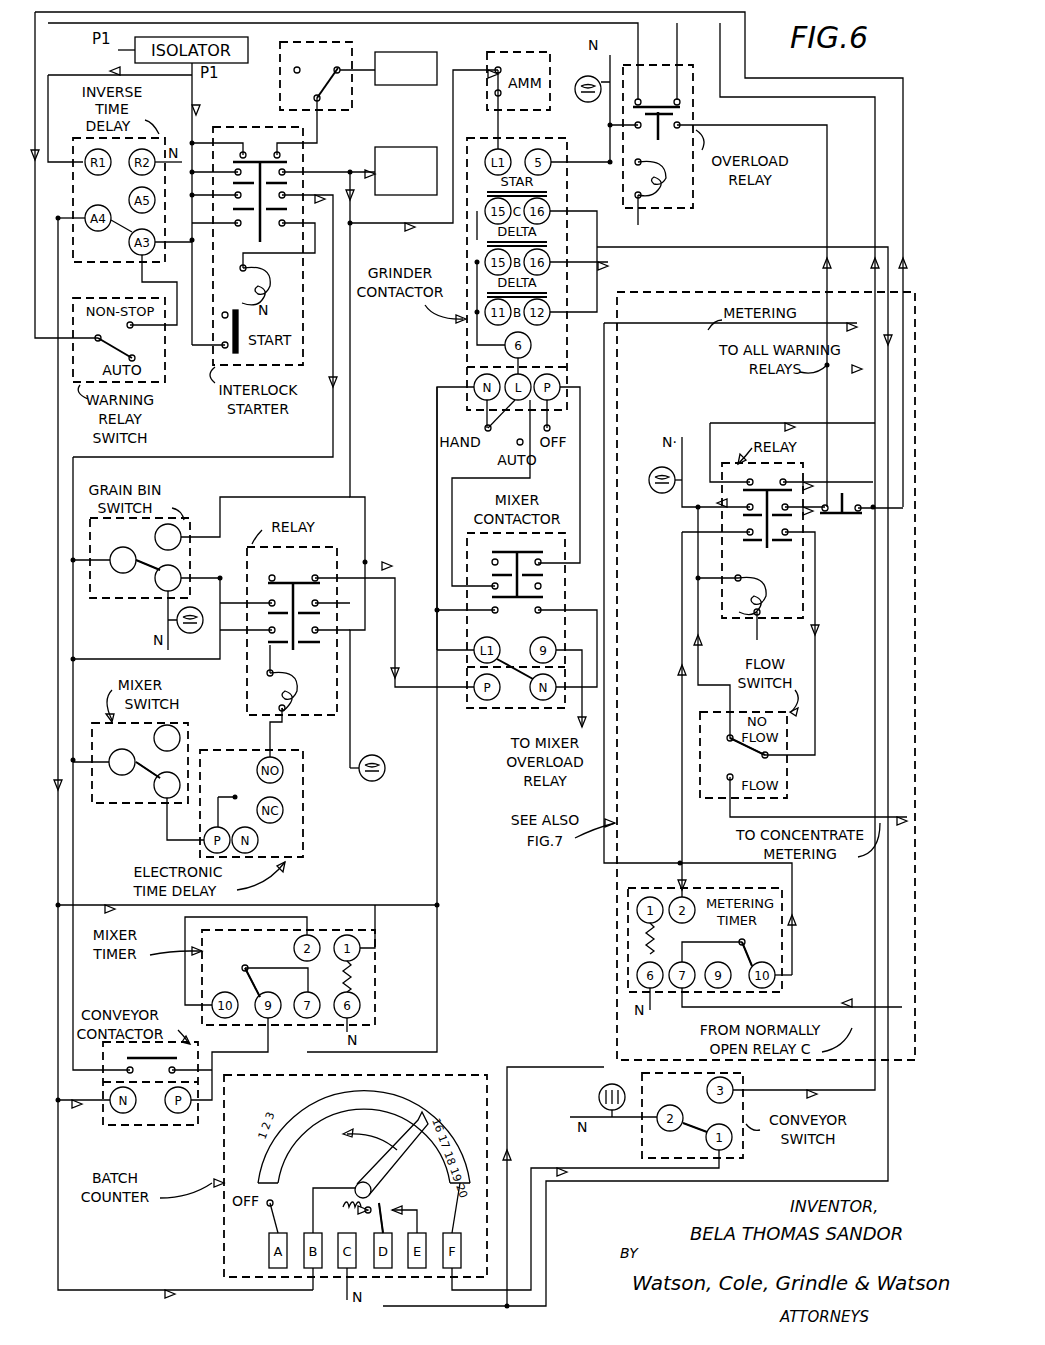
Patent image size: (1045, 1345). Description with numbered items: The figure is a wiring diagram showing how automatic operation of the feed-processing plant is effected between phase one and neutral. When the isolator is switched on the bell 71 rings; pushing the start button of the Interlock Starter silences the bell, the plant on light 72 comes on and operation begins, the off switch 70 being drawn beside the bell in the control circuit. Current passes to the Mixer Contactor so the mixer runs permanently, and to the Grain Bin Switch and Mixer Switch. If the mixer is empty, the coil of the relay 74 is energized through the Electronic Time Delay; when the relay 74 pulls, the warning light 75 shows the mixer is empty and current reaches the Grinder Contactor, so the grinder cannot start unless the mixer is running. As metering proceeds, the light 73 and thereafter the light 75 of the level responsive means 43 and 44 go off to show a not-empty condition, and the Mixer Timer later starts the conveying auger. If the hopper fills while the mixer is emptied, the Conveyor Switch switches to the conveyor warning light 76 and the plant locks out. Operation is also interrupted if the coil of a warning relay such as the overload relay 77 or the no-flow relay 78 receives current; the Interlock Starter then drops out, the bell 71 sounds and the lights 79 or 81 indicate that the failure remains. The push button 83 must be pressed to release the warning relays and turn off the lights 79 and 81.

The level responsive means 43 is at (112, 600).
The level responsive means 44 is at (188, 722).
The off switch 70 is at (352, 48).
The bell 71 is at (425, 52).
The plant on light 72 is at (414, 142).
The light 73 is at (202, 633).
The relay 74 is at (246, 562).
The warning light 75 is at (382, 780).
The conveyor warning light 76 is at (599, 1097).
The warning relay 77 is at (696, 92).
The warning relay 78 is at (735, 628).
The light 79 is at (586, 102).
The light 81 is at (660, 496).
The push button 83 is at (854, 515).